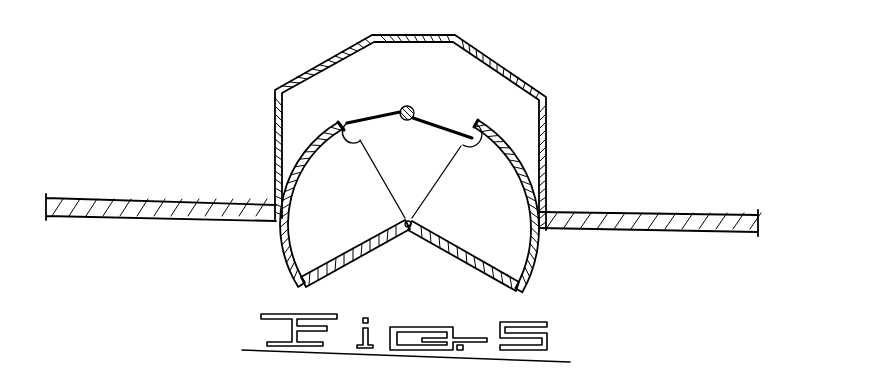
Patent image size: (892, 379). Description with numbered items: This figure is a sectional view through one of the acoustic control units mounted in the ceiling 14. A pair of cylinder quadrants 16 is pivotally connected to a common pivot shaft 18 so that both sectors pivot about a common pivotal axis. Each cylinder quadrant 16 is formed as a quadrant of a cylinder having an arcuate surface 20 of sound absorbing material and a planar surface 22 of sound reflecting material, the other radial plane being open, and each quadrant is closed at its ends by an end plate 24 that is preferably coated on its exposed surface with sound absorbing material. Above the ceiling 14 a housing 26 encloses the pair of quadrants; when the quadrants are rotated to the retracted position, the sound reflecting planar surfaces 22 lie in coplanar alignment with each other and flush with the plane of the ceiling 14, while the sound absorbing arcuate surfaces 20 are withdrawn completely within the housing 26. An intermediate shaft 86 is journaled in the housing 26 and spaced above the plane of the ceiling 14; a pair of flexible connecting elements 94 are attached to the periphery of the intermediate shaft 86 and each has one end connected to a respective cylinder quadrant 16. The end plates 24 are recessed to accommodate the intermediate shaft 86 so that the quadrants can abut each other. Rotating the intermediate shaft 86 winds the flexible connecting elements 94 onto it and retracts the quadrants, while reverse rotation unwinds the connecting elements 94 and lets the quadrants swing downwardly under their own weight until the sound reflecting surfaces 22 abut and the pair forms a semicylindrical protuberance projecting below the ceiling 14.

The ceiling 14 is at (137, 210).
The cylinder quadrant 16 is at (270, 248).
The pivot shaft 18 is at (408, 228).
The arcuate surface 20 is at (313, 137).
The planar surface 22 is at (340, 262).
The end plate 24 is at (345, 206).
The housing 26 is at (332, 57).
The intermediate shaft 86 is at (412, 108).
The flexible connecting element 94 is at (375, 112).